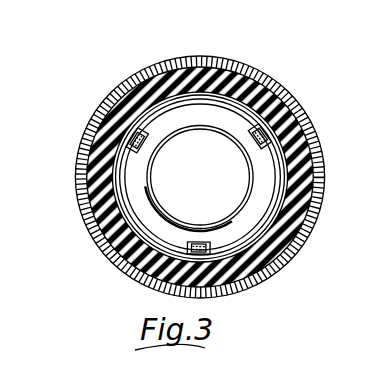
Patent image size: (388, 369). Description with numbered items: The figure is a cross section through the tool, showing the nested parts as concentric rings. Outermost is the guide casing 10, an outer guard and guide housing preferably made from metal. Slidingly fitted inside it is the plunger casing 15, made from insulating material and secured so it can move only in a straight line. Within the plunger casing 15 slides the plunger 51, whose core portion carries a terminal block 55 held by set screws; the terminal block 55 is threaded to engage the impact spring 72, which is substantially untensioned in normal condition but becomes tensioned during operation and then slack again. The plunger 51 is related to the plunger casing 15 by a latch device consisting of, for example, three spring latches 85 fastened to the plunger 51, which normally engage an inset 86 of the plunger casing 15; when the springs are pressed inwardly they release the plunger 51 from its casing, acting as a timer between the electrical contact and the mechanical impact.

The guide casing 10 is at (300, 235).
The plunger casing 15 is at (213, 115).
The plunger 51 is at (259, 190).
The terminal block 55 is at (200, 177).
The impact spring 72 is at (155, 203).
The spring latches 85 is at (262, 132).
The inset 86 is at (122, 183).